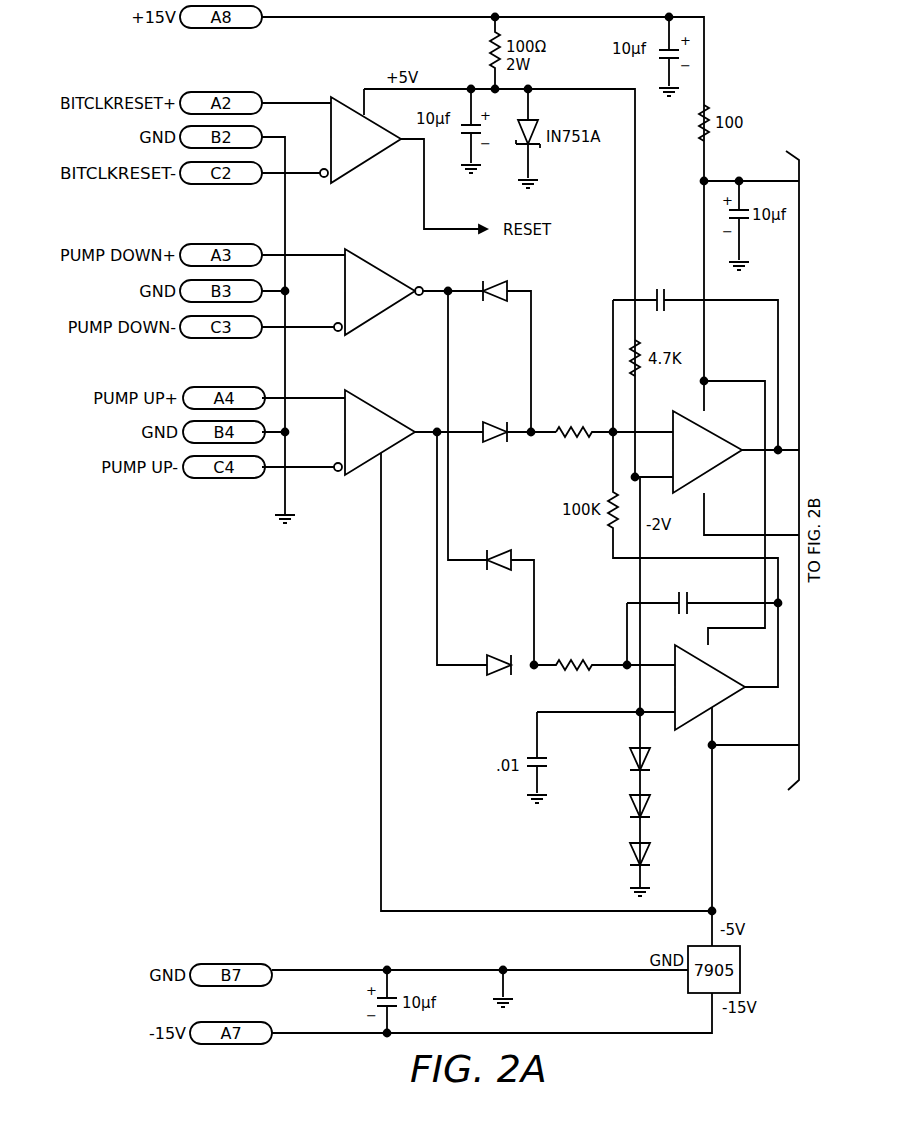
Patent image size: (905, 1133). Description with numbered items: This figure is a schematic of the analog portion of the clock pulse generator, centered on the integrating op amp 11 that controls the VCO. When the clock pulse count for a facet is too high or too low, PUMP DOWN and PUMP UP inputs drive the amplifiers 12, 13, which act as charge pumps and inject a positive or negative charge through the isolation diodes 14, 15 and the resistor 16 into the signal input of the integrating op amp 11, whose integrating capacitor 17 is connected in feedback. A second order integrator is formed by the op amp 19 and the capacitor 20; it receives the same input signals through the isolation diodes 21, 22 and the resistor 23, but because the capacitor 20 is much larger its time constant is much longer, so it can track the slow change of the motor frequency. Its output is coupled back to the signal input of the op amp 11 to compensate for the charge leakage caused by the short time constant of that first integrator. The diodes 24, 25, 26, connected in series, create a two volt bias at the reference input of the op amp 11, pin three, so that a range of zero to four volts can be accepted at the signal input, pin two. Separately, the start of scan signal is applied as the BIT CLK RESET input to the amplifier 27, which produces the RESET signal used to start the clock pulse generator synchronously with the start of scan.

The integrating op amp 11 is at (726, 468).
The amplifier 12 is at (374, 260).
The amplifier 13 is at (384, 403).
The isolation diode 14 is at (500, 305).
The isolation diode 15 is at (500, 446).
The resistor 16 is at (568, 434).
The integrating capacitor 17 is at (664, 287).
The op amp 19 is at (730, 696).
The capacitor 20 is at (694, 598).
The isolation diode 21 is at (500, 572).
The isolation diode 22 is at (496, 678).
The resistor 23 is at (572, 671).
The diode 24 is at (630, 756).
The diode 25 is at (630, 804).
The diode 26 is at (630, 850).
The amplifier 27 is at (348, 101).